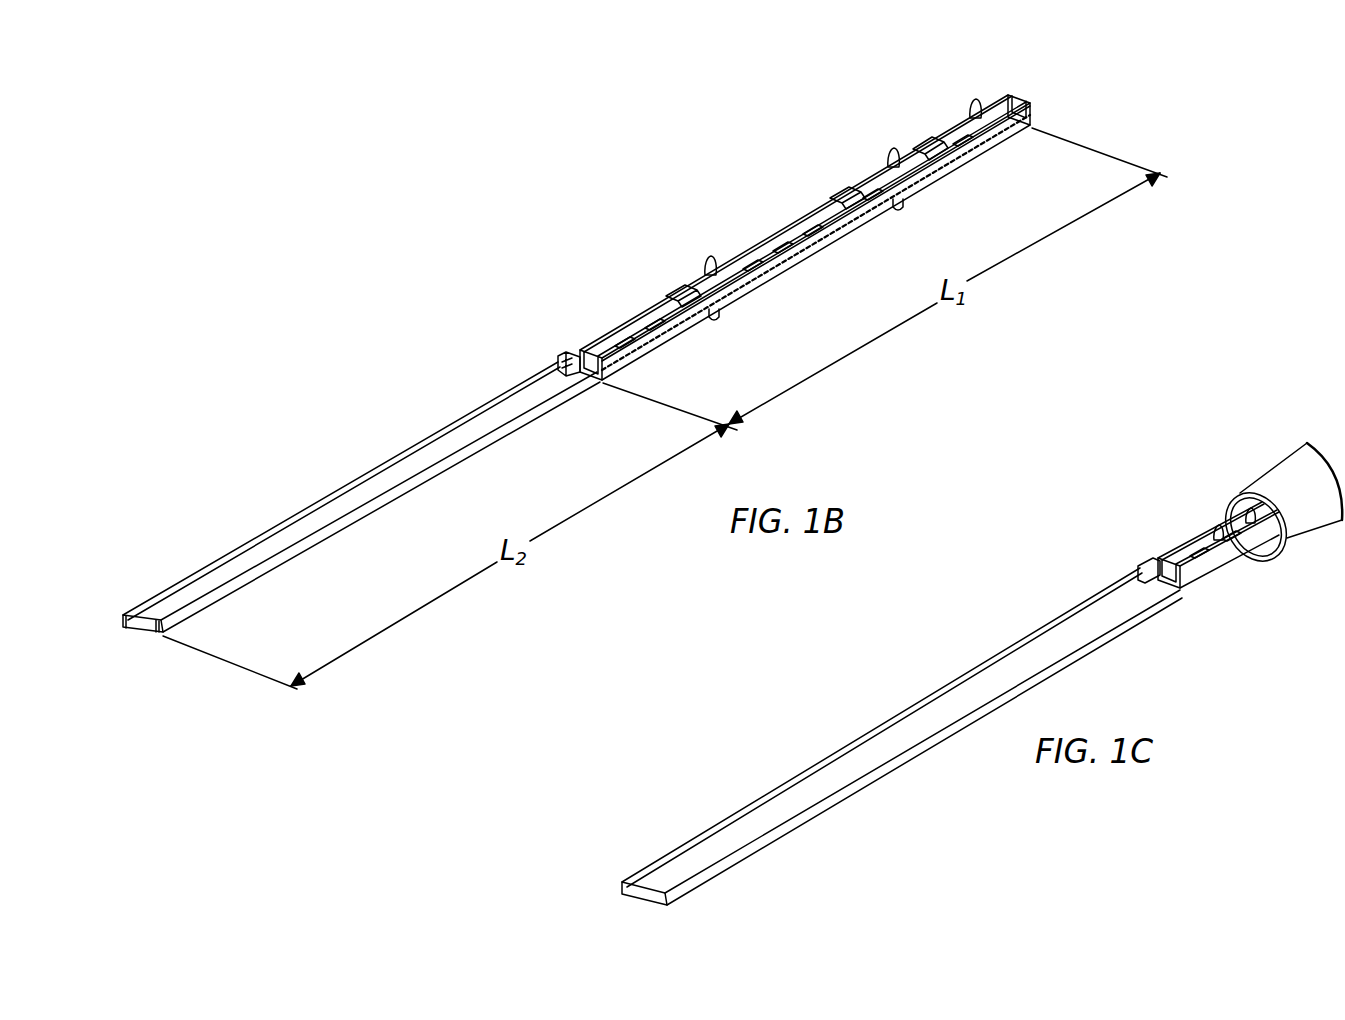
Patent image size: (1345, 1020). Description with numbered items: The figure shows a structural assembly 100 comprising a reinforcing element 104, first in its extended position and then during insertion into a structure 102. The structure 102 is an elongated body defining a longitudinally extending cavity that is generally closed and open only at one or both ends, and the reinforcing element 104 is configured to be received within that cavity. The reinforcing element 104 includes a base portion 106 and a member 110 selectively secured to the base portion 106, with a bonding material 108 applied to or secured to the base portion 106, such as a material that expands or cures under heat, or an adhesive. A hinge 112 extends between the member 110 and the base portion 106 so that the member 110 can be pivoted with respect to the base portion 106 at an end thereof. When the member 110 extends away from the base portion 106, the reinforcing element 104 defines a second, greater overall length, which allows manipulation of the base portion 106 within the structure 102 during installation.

In FIG. 1C, the structural assembly 100 is at (982, 646).
In FIG. 1C, the structure 102 is at (1285, 478).
In FIG. 1B, the reinforcing element 104 is at (745, 237).
In FIG. 1C, the reinforcing element 104 is at (1197, 577).
In FIG. 1B, the base portion 106 is at (826, 237).
In FIG. 1B, the bonding material 108 is at (1012, 133).
In FIG. 1B, the member 110 is at (260, 543).
In FIG. 1B, the hinge 112 is at (576, 356).